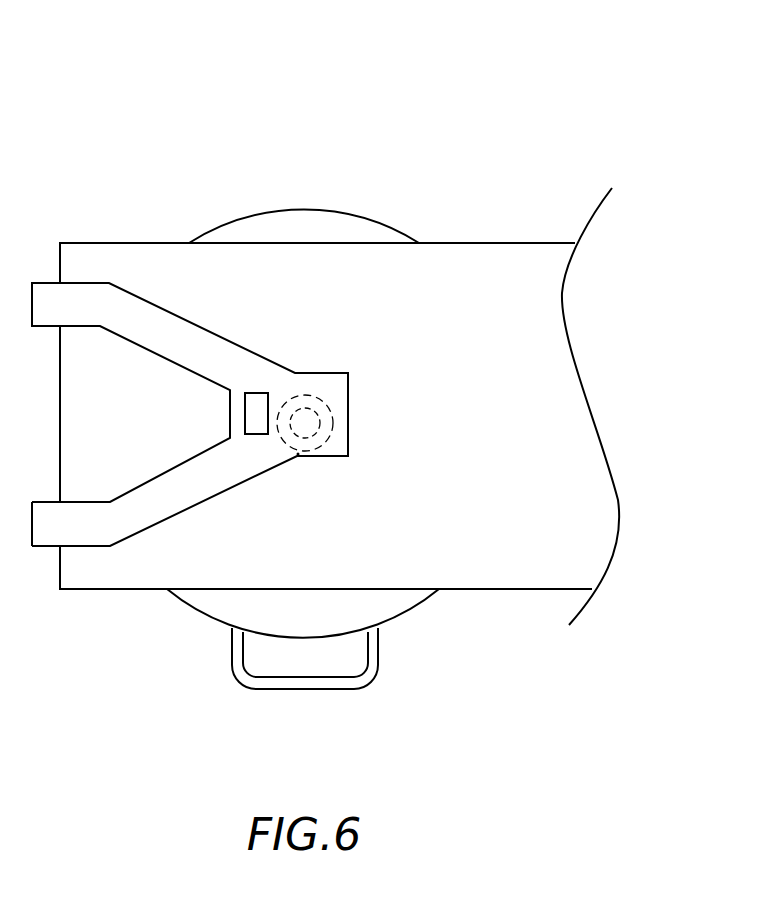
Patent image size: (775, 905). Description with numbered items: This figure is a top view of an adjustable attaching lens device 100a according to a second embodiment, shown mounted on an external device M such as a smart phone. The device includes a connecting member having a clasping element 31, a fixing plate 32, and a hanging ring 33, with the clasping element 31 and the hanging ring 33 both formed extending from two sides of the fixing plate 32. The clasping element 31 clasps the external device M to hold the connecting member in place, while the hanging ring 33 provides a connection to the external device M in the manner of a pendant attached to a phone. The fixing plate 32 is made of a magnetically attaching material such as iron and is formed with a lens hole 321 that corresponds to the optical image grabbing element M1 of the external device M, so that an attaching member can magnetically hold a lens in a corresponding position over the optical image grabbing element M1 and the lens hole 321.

The adjustable attaching lens device 100a is at (679, 134).
The external device M is at (513, 260).
The optical image grabbing element M1 is at (298, 450).
The clasping element 31 is at (142, 323).
The fixing plate 32 is at (305, 227).
The lens hole 321 is at (303, 432).
The hanging ring 33 is at (305, 683).